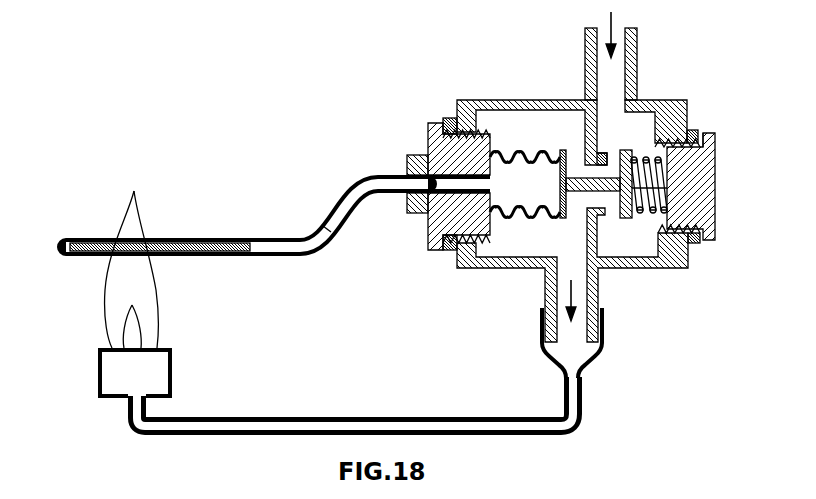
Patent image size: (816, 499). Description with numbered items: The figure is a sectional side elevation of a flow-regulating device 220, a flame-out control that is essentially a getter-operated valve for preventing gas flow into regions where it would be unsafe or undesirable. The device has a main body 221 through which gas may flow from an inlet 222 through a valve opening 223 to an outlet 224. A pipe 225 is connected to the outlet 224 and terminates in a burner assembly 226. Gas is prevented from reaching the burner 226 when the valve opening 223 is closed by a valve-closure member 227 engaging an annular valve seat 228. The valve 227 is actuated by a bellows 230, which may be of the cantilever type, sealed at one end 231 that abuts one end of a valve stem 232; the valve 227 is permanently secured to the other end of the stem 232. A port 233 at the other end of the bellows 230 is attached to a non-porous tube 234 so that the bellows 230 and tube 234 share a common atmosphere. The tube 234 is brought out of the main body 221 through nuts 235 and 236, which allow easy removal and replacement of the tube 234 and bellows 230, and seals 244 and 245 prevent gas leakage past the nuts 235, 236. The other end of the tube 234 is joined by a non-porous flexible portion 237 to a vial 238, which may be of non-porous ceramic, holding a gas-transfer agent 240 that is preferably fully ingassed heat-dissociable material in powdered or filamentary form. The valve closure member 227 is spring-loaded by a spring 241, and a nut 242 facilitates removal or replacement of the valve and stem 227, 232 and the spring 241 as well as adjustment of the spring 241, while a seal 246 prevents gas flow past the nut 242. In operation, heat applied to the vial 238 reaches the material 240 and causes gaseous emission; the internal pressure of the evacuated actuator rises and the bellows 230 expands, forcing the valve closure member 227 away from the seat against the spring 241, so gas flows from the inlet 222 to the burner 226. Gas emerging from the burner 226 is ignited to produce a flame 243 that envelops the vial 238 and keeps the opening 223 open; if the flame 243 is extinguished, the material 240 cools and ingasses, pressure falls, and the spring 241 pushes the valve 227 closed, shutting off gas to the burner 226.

The flow-regulating device 220 is at (453, 94).
The main body 221 is at (668, 265).
The inlet 222 is at (613, 32).
The valve opening 223 is at (603, 155).
The outlet 224 is at (583, 350).
The pipe 225 is at (512, 422).
The burner assembly 226 is at (173, 361).
The valve-closure member 227 is at (665, 140).
The annular valve seat 228 is at (606, 215).
The bellows 230 is at (516, 150).
The sealed end of bellows 231 is at (565, 173).
The valve stem 232 is at (571, 195).
The port 233 is at (488, 182).
The non-porous tube 234 is at (405, 170).
The nut 235 is at (450, 250).
The nut 236 is at (420, 213).
The non-porous flexible portion 237 is at (328, 232).
The vial 238 is at (186, 238).
The gas-transfer agent 240 is at (86, 257).
The spring 241 is at (662, 188).
The nut 242 is at (714, 215).
The flame 243 is at (155, 320).
The seal 244 is at (446, 118).
The seal 245 is at (428, 150).
The seal 246 is at (700, 240).